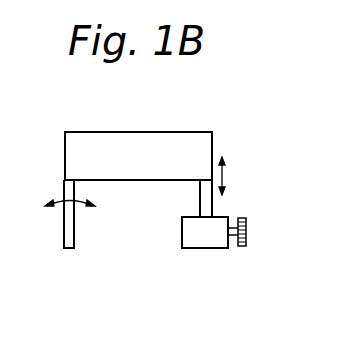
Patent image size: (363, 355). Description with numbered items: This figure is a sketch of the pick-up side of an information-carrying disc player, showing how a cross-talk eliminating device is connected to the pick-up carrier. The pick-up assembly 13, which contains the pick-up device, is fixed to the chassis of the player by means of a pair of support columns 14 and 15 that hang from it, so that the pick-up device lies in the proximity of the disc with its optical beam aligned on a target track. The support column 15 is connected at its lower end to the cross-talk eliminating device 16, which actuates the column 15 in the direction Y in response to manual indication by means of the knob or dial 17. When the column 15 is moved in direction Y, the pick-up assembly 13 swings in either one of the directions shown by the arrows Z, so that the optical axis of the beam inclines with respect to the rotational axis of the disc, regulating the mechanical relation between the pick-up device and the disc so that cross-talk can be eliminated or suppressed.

The pick-up assembly 13 is at (148, 134).
The support column 14 is at (65, 232).
The support column 15 is at (202, 207).
The cross-talk eliminating device 16 is at (205, 249).
The knob or dial 17 is at (250, 232).
The direction Y is at (224, 177).
The arrows Z is at (78, 203).